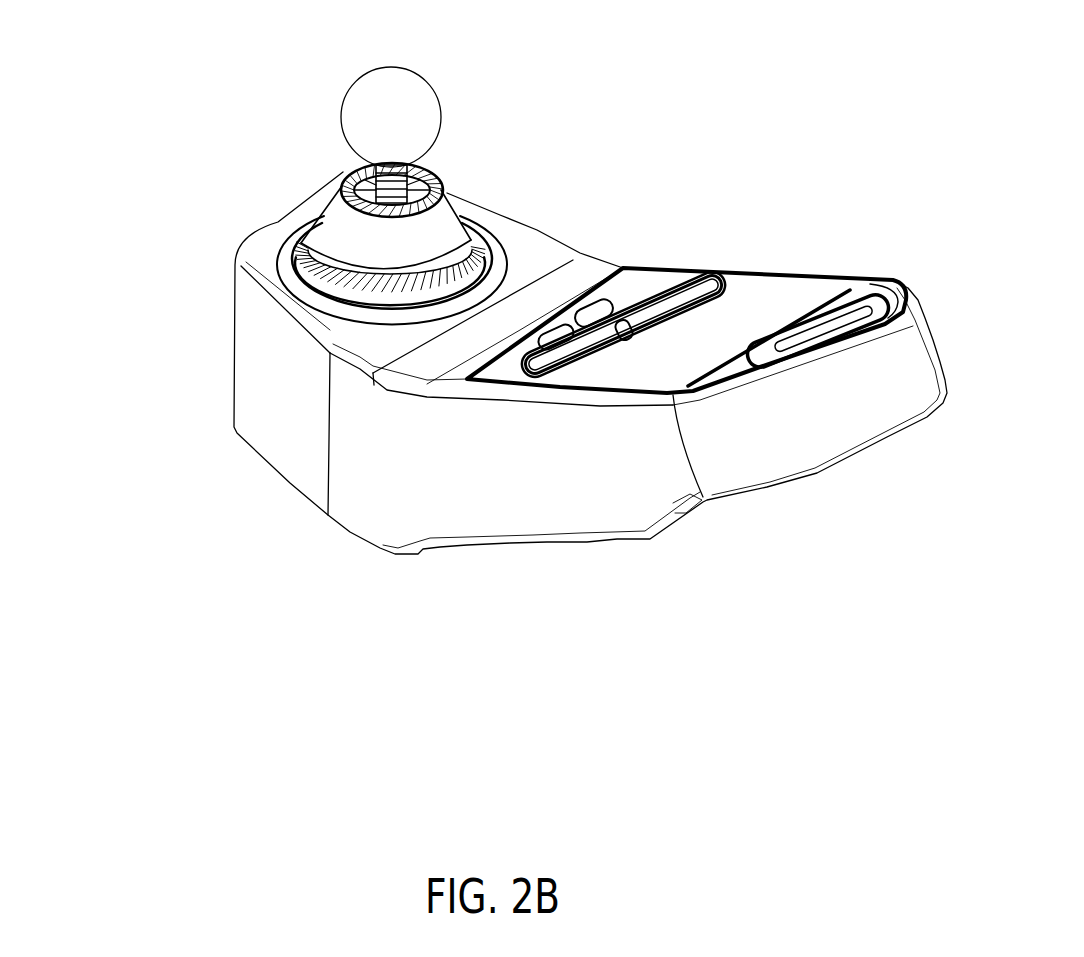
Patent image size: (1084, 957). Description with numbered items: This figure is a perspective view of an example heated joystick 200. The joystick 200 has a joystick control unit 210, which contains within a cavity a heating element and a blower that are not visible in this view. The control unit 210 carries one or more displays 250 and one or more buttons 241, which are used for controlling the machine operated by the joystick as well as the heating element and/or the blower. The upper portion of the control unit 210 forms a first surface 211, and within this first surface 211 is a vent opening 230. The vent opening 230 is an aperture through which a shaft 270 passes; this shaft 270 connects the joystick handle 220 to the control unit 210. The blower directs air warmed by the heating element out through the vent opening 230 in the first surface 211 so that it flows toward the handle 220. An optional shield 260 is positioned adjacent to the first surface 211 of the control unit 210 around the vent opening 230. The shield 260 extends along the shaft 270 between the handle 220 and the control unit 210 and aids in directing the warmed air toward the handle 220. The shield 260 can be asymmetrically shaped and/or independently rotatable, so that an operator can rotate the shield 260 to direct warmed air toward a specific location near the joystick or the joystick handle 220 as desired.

The joystick 200 is at (109, 128).
The joystick control unit 210 is at (283, 442).
The first surface 211 is at (518, 250).
The joystick handle 220 is at (407, 90).
The vent opening 230 is at (415, 187).
The buttons 241 is at (673, 273).
The displays 250 is at (753, 300).
The shield 260 is at (302, 255).
The shaft 270 is at (270, 186).